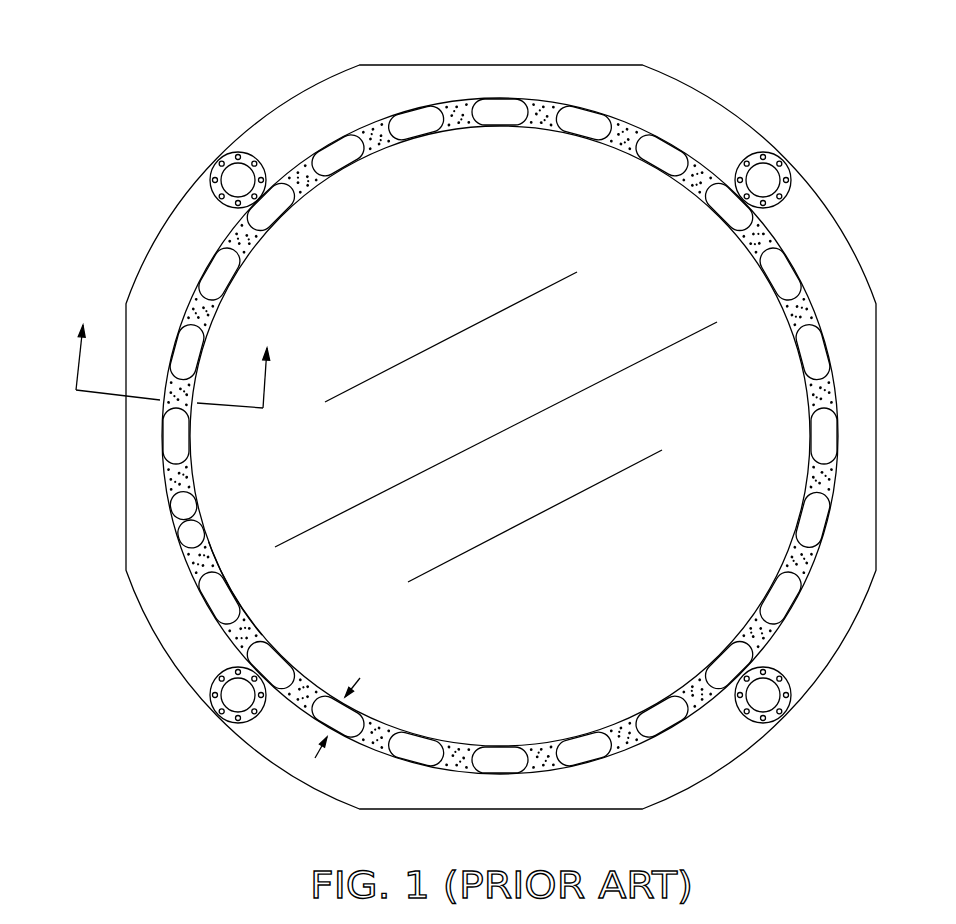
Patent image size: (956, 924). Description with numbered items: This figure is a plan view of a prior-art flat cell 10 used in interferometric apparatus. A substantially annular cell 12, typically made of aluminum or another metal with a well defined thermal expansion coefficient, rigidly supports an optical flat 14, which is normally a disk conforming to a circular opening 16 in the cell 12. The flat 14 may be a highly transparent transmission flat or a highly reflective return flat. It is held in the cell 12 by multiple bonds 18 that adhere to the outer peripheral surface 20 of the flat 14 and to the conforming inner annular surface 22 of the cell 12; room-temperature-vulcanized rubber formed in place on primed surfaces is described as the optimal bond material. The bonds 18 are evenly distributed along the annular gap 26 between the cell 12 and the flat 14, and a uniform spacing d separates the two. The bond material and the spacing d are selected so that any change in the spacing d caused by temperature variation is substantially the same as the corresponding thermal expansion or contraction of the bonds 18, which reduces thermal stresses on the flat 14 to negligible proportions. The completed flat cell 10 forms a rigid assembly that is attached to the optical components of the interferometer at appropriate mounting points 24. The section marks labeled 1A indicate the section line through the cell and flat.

The flat cell 10 is at (805, 112).
The cell 12 is at (693, 102).
The optical flat 14 is at (378, 292).
The circular opening 16 is at (222, 603).
The bonds 18 is at (233, 635).
The outer peripheral surface 20 is at (228, 597).
The inner annular surface 22 is at (193, 530).
The mounting points 24 is at (767, 702).
The gap 26 is at (498, 762).
The spacing d is at (327, 707).
The section line 1A- 1A is at (166, 391).